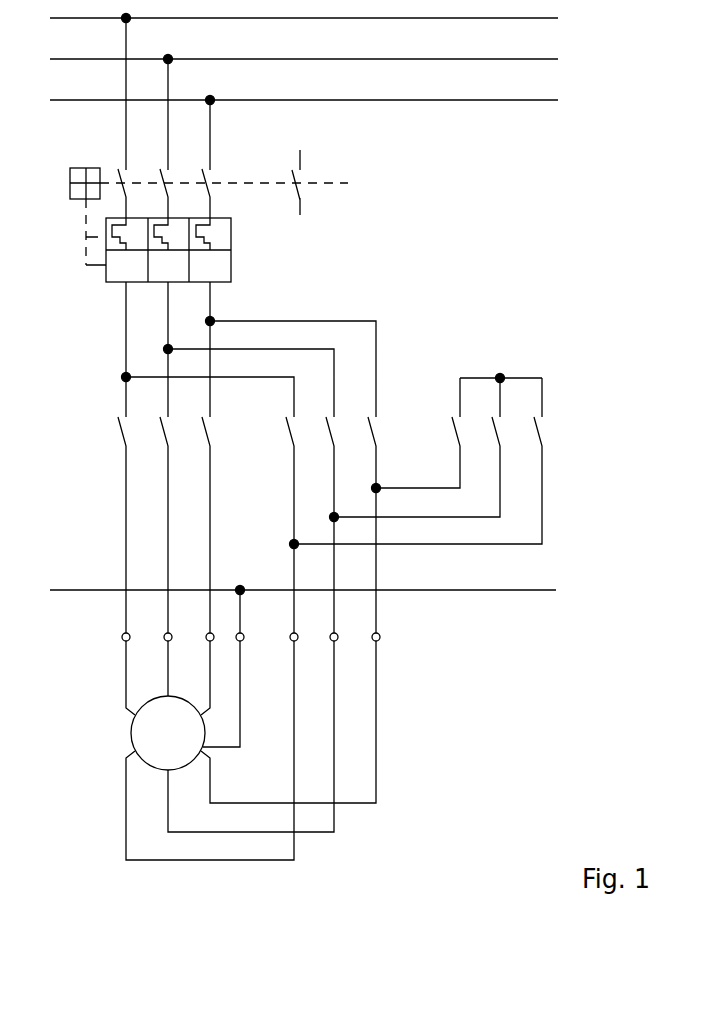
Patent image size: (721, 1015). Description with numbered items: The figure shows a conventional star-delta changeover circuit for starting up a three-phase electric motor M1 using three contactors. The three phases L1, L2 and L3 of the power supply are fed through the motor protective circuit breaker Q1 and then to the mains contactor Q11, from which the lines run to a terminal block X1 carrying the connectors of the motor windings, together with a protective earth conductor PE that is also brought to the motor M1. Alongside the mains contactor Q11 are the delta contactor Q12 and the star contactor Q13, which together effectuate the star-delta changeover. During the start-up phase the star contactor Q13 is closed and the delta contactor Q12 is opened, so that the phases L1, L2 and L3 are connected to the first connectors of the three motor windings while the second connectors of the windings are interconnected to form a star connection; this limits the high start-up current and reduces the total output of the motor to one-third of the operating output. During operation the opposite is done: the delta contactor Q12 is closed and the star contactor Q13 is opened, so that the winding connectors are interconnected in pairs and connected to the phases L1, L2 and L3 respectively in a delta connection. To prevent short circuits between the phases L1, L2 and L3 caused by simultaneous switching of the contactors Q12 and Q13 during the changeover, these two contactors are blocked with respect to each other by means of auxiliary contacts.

The phase L1 is at (294, 85).
The phase L2 is at (294, 103).
The phase L3 is at (294, 123).
The motor protective circuit breaker Q1 is at (70, 183).
The mains contactor Q11 is at (148, 520).
The delta contactor Q12 is at (315, 520).
The star contactor Q13 is at (423, 461).
The protective earth conductor PE is at (292, 608).
The terminal block X1 is at (245, 634).
The three-phase motor M1 is at (234, 750).